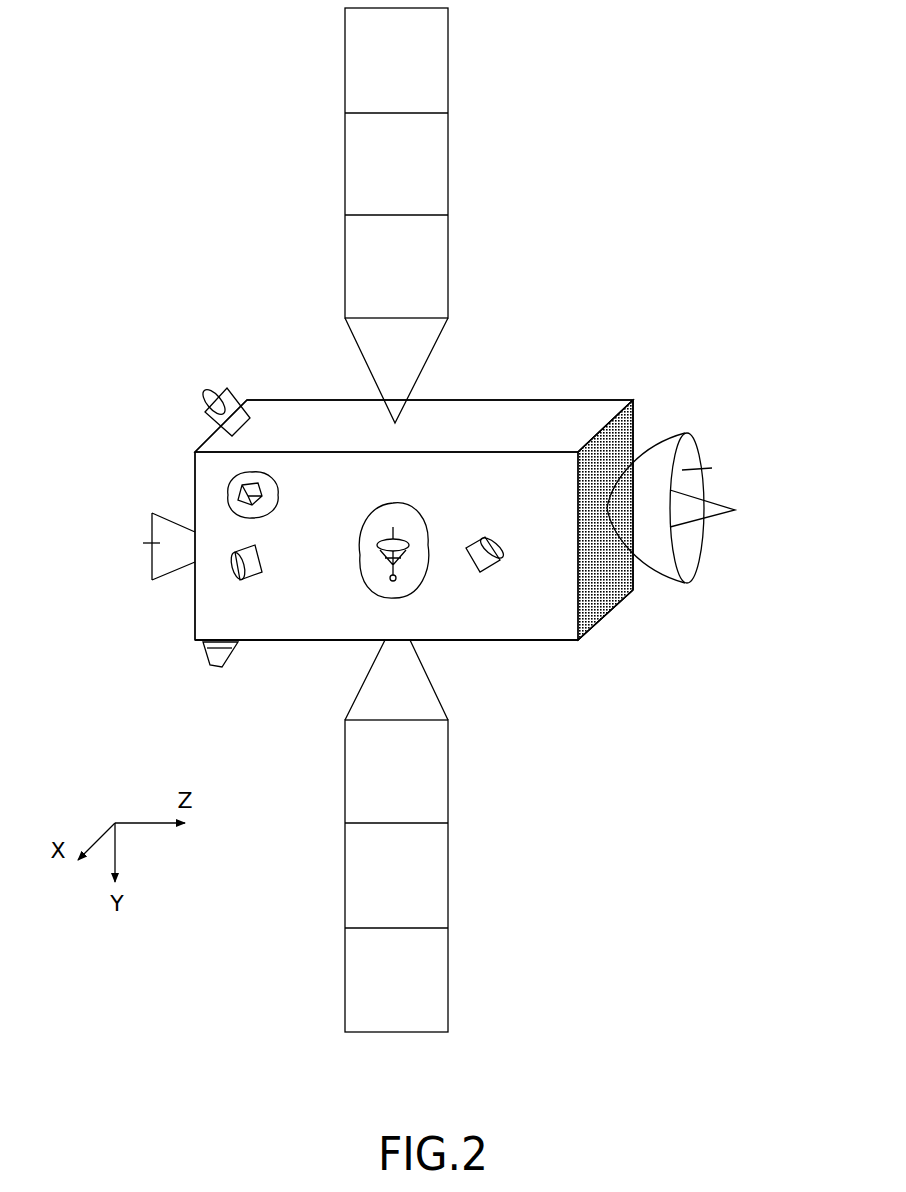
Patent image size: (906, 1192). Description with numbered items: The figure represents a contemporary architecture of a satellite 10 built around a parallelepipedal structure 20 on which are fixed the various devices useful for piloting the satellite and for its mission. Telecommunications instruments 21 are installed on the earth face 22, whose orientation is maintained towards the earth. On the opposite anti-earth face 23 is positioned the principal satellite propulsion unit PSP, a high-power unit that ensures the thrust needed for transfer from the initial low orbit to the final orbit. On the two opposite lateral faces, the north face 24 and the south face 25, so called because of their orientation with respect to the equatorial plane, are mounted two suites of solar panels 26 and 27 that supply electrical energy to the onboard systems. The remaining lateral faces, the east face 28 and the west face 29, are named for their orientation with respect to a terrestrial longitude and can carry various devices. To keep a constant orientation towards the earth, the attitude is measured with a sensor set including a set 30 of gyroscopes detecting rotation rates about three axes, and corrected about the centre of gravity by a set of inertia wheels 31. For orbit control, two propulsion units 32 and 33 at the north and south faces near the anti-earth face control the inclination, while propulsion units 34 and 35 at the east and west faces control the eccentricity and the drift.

The satellite 10 is at (621, 246).
The parallelepipedal structure 20 is at (575, 412).
The telecommunications instruments 21 is at (680, 472).
The earth face 22 is at (603, 607).
The anti-earth face 23 is at (195, 490).
The north face 24 is at (482, 410).
The south face 25 is at (490, 640).
The solar panels 26 is at (425, 163).
The solar panels 27 is at (425, 873).
The east face 28 is at (341, 617).
The west face 29 is at (633, 430).
The set of gyroscopes 30 is at (275, 503).
The set of inertia wheels 31 is at (415, 530).
The propulsion unit 32 is at (212, 398).
The propulsion unit 33 is at (208, 652).
The propulsion unit 34 is at (232, 568).
The propulsion unit 35 is at (478, 577).
The principal satellite propulsion unit PSP is at (152, 543).